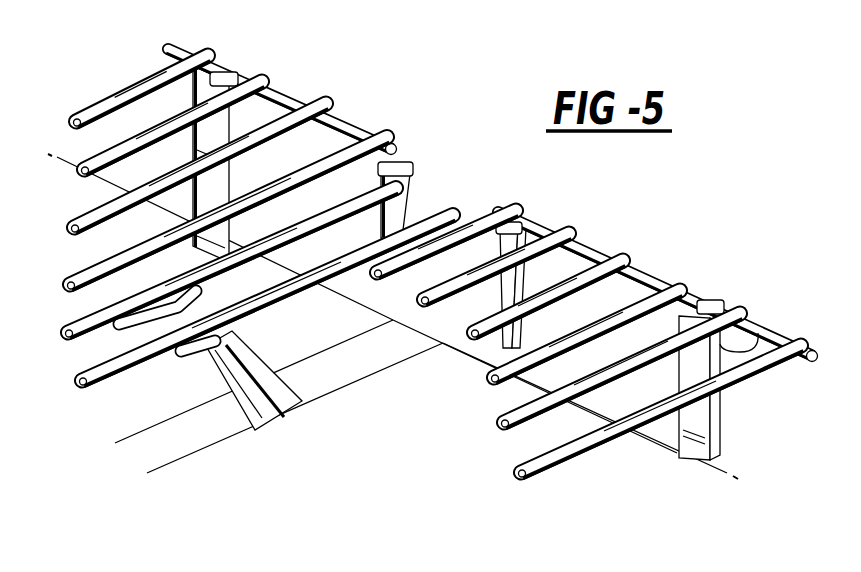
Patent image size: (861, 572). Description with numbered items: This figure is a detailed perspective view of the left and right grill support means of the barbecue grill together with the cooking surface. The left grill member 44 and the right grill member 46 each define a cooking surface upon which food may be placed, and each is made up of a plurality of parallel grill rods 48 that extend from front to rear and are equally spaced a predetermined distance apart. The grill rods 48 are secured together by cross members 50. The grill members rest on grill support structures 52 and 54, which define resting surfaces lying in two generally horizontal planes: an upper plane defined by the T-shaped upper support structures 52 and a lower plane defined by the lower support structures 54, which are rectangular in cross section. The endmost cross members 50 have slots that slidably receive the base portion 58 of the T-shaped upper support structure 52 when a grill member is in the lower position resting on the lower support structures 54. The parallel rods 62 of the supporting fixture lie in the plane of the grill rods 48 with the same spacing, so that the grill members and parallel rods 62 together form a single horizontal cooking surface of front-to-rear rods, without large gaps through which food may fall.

The left grill member 44 is at (50, 350).
The right grill member 46 is at (478, 466).
The grill rods 48 is at (104, 105).
The cross members 50 is at (348, 124).
The upper grill support structure 52 is at (233, 65).
The lower grill support structure 54 is at (406, 205).
The base portion 58 is at (753, 333).
The parallel rods 62 is at (323, 267).